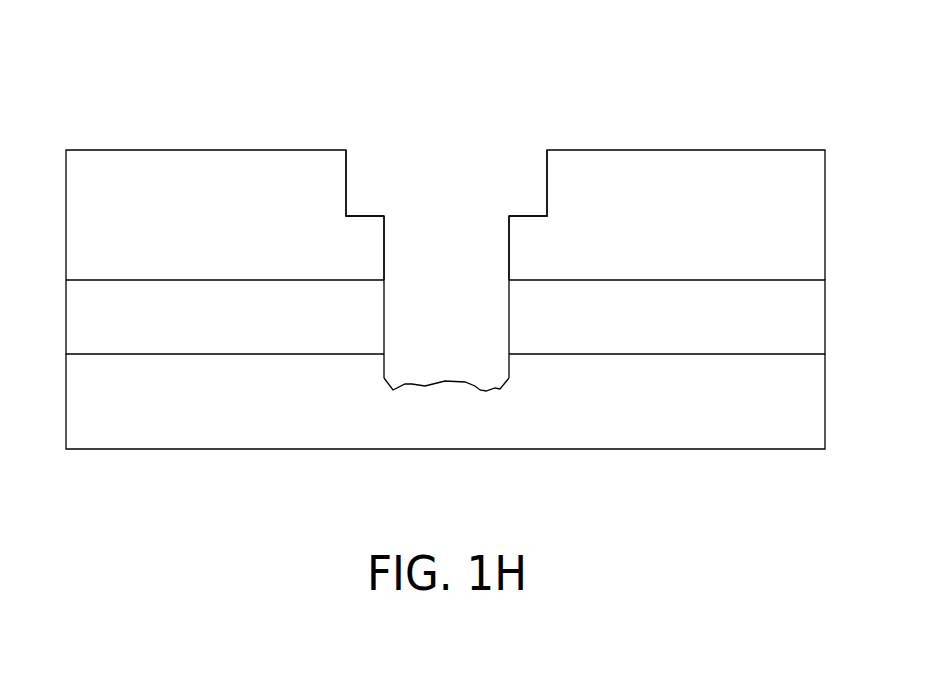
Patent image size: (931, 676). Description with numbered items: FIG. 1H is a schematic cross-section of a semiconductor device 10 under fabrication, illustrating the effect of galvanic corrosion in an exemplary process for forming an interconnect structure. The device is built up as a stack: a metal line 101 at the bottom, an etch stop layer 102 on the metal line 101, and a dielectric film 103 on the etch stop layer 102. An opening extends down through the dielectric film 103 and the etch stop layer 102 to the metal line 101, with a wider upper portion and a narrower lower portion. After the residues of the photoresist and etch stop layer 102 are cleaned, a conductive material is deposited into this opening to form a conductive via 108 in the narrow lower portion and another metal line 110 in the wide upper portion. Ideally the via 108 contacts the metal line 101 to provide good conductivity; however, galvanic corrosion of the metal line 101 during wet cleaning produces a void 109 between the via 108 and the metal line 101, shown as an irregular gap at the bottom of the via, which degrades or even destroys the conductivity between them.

The semiconductor device 10 is at (74, 90).
The metal line 101 is at (224, 417).
The etch stop layer 102 is at (224, 333).
The dielectric film 103 is at (224, 260).
The conductive via 108 is at (426, 317).
The void 109 is at (489, 370).
The metal line 110 is at (446, 170).